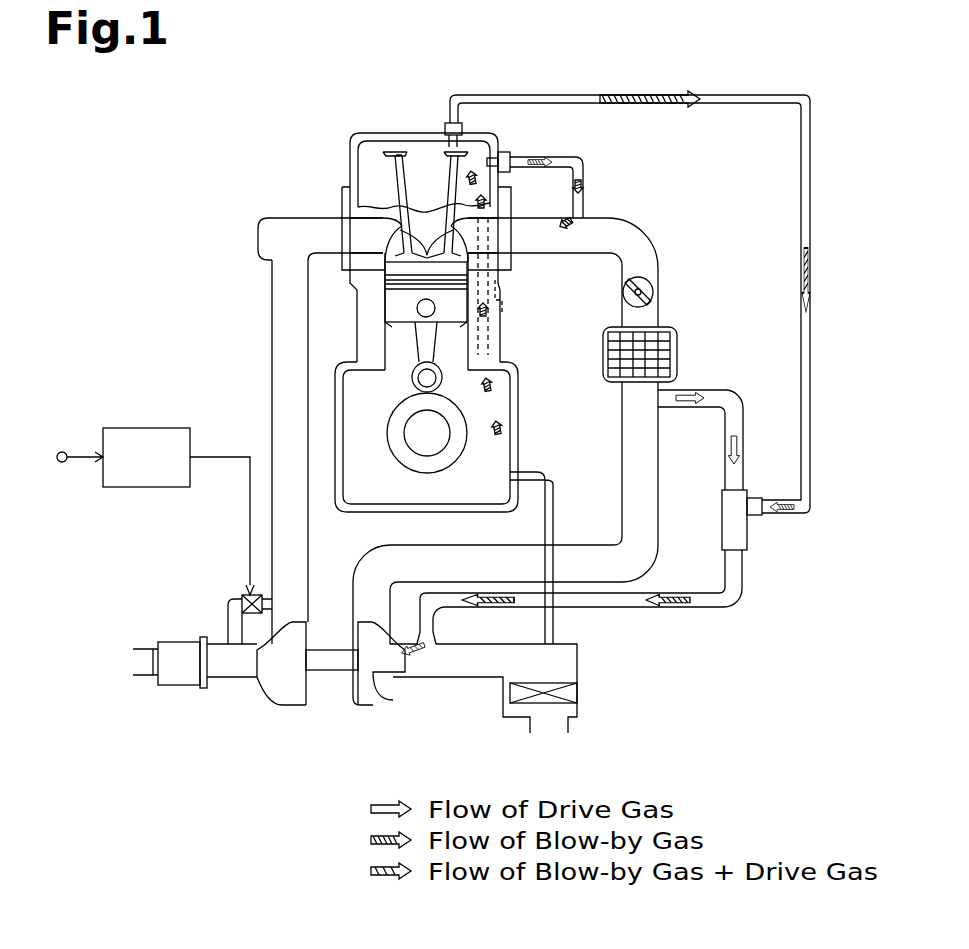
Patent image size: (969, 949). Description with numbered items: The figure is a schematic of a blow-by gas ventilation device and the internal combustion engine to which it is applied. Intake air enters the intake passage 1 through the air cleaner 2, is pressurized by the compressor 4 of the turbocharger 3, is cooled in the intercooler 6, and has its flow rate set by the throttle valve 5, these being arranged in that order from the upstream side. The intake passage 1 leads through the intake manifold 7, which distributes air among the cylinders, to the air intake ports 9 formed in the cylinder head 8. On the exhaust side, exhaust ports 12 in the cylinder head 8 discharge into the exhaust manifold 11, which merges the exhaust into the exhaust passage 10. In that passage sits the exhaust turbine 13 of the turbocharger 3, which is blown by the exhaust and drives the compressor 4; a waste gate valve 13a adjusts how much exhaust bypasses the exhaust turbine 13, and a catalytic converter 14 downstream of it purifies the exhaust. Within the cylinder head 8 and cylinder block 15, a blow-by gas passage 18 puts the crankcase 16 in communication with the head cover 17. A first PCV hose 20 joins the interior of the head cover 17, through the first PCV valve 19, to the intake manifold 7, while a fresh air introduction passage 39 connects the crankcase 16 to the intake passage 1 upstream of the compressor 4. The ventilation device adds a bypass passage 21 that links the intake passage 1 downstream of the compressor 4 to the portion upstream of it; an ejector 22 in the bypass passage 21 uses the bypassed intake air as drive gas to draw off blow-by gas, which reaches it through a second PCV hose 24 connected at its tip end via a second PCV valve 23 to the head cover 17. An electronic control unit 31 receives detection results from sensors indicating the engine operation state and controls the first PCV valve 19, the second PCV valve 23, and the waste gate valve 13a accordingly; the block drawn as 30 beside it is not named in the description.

The intake passage 1 is at (585, 545).
The air cleaner 2 is at (577, 690).
The turbocharger 3 is at (335, 693).
The compressor 4 is at (393, 685).
The throttle valve 5 is at (623, 294).
The intercooler 6 is at (603, 350).
The intake manifold 7 is at (558, 253).
The cylinder head 8 is at (342, 200).
The air intake ports 9 is at (510, 262).
The exhaust passage 10 is at (272, 336).
The exhaust manifold 11 is at (262, 218).
The exhaust ports 12 is at (346, 262).
The exhaust turbine 13 is at (276, 690).
The waste gate valve 13a is at (240, 597).
The catalytic converter 14 is at (180, 690).
The cylinder block 15 is at (497, 345).
The crankcase 16 is at (388, 414).
The head cover 17 is at (350, 153).
The blow-by gas passage 18 is at (493, 318).
The first PCV valve 19 is at (512, 152).
The first PCV hose 20 is at (585, 175).
The bypass passage 21 is at (742, 567).
The ejector 22 is at (747, 530).
The second PCV valve 23 is at (446, 125).
The second PCV hose 24 is at (801, 162).
The controller 30 is at (143, 428).
The electronic control unit 31 is at (62, 452).
The fresh air introduction passage 39 is at (553, 625).